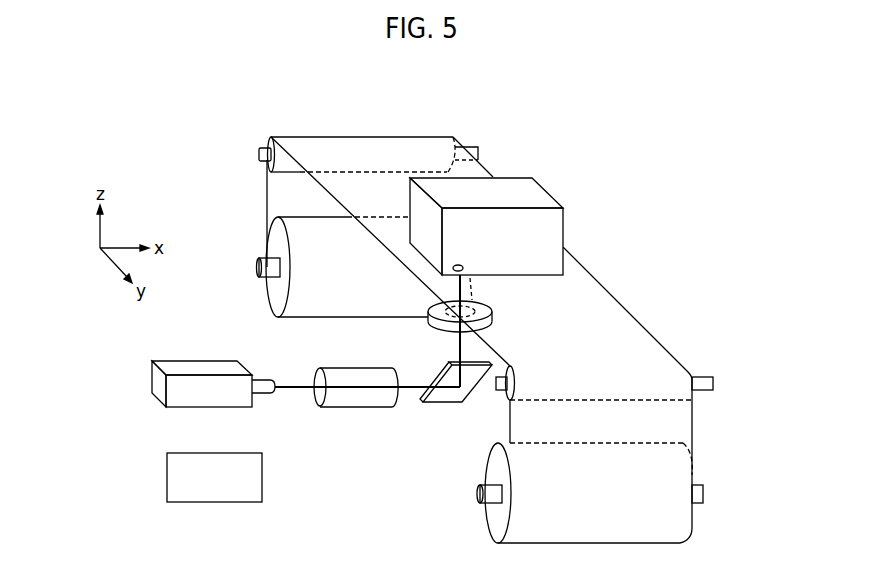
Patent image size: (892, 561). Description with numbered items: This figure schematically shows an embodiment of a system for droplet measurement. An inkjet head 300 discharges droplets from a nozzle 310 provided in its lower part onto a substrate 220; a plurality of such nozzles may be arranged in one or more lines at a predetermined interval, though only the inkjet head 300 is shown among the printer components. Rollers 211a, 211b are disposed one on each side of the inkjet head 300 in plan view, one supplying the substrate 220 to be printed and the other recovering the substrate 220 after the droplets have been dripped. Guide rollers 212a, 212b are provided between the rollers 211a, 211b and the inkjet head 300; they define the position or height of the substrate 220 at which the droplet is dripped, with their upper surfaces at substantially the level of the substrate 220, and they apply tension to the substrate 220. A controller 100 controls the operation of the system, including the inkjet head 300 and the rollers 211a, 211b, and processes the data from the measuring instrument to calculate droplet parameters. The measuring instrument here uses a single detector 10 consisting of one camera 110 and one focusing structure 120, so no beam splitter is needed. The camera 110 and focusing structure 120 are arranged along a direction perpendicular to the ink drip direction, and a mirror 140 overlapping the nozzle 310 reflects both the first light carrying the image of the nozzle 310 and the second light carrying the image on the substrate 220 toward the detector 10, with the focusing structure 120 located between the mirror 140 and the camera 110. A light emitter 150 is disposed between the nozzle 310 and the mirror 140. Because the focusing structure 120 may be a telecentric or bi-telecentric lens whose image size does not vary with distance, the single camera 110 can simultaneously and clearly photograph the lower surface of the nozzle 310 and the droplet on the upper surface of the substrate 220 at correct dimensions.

The detector 10 is at (250, 415).
The controller 100 is at (167, 477).
The camera 110 is at (155, 381).
The focusing structure 120 is at (340, 375).
The mirror 140 is at (448, 403).
The light emitter 150 is at (437, 322).
The roller 211a is at (258, 267).
The roller 211b is at (704, 493).
The guide roller 212a is at (259, 154).
The guide roller 212b is at (714, 383).
The substrate 220 is at (615, 308).
The inkjet head 300 is at (522, 179).
The nozzle 310 is at (462, 266).